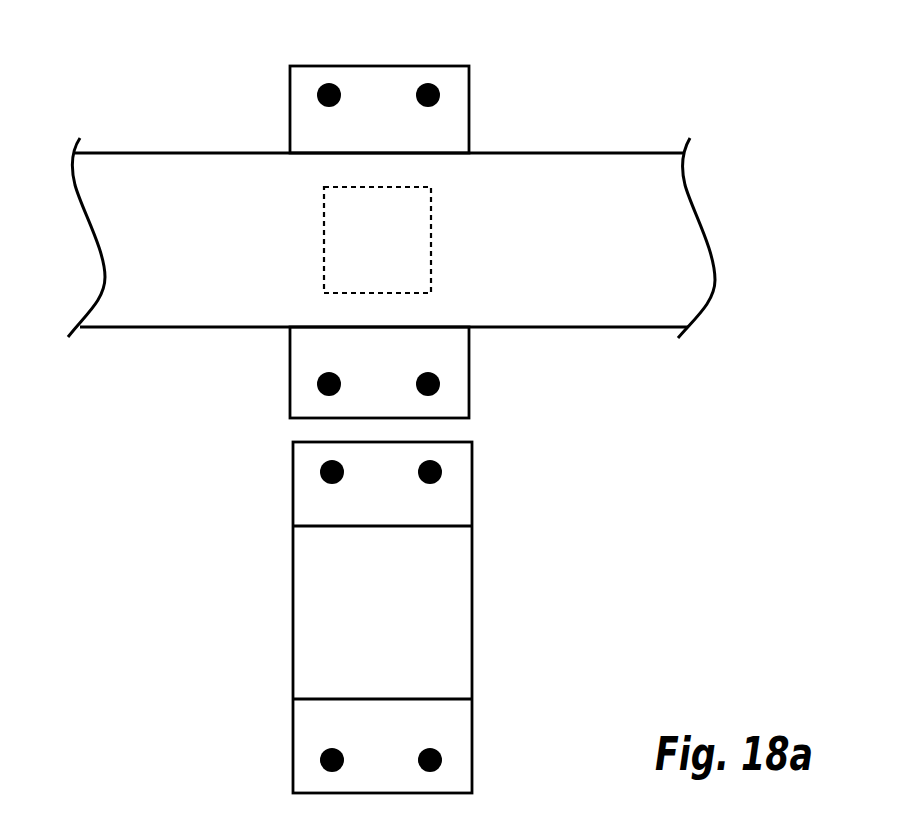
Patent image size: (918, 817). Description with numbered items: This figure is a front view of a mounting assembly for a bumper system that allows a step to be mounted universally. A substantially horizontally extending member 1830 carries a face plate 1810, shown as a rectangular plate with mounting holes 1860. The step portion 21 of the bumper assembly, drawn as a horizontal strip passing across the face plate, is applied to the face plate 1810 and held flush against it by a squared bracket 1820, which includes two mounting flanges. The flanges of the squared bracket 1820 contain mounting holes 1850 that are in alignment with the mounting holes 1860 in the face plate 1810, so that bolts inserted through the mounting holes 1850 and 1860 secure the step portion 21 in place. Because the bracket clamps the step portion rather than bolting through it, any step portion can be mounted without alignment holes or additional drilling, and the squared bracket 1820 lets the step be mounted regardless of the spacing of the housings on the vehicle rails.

The step portion 21 is at (583, 153).
The face plate 1810 is at (469, 85).
The squared bracket 1820 is at (472, 603).
The horizontally extending member 1830 is at (431, 240).
The mounting holes 1850 is at (318, 473).
The mounting holes 1860 is at (317, 96).